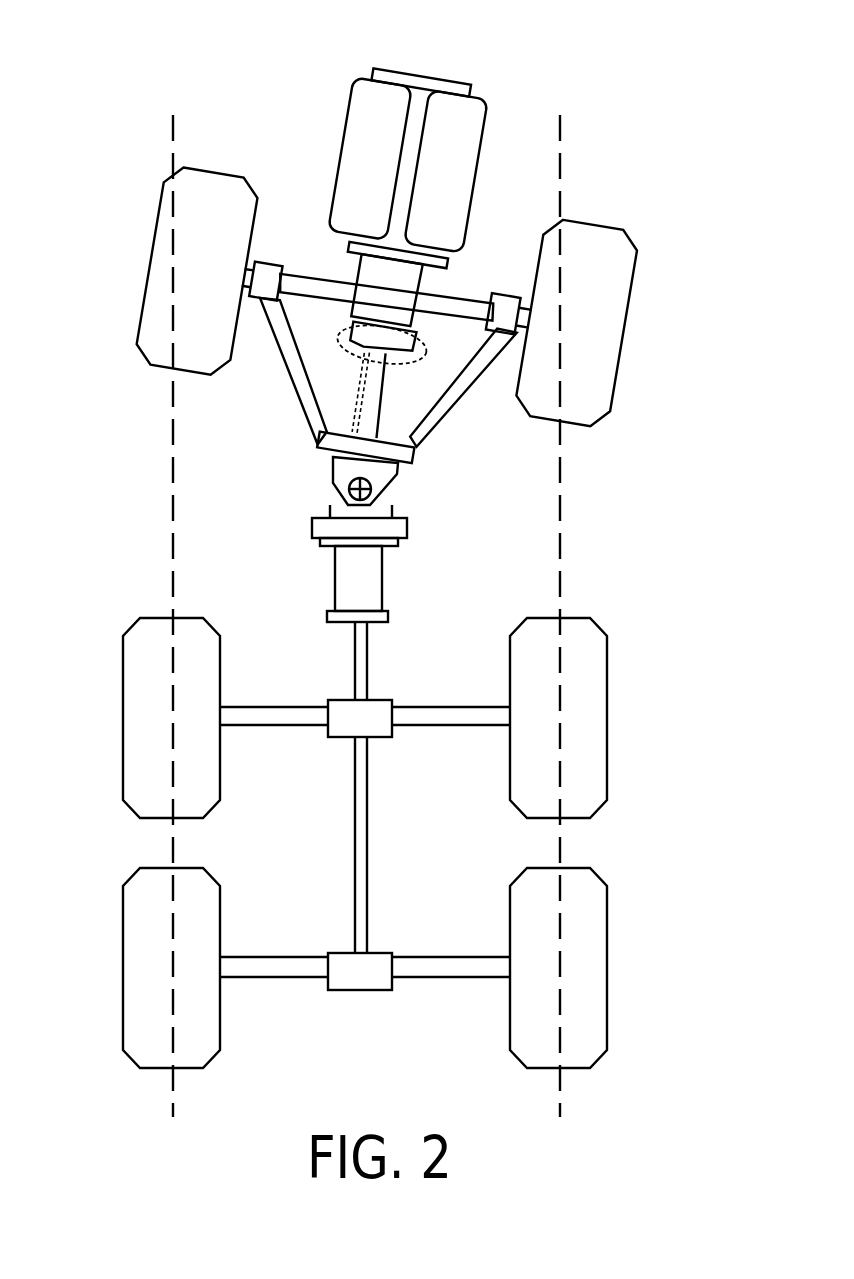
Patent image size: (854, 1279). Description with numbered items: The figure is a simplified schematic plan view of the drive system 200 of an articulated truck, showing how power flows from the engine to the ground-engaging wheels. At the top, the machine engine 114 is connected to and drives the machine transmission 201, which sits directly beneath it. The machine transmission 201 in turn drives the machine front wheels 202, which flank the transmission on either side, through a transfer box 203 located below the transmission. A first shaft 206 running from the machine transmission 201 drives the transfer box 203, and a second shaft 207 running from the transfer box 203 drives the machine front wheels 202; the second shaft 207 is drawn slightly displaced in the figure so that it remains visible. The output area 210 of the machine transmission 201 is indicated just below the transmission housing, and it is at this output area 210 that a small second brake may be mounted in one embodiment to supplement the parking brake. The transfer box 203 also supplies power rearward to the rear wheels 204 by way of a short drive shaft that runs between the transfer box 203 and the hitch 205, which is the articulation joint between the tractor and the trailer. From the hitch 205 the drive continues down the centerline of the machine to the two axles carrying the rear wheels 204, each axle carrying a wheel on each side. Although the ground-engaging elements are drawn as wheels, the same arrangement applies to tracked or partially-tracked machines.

The machine engine 114 is at (462, 82).
The drive system 200 is at (650, 517).
The machine transmission 201 is at (360, 281).
The machine front wheels 202 is at (180, 178).
The transfer box 203 is at (318, 445).
The rear wheels 204 is at (153, 618).
The hitch 205 is at (377, 485).
The first shaft 206 is at (357, 375).
The second shaft 207 is at (357, 375).
The output area 210 is at (434, 353).